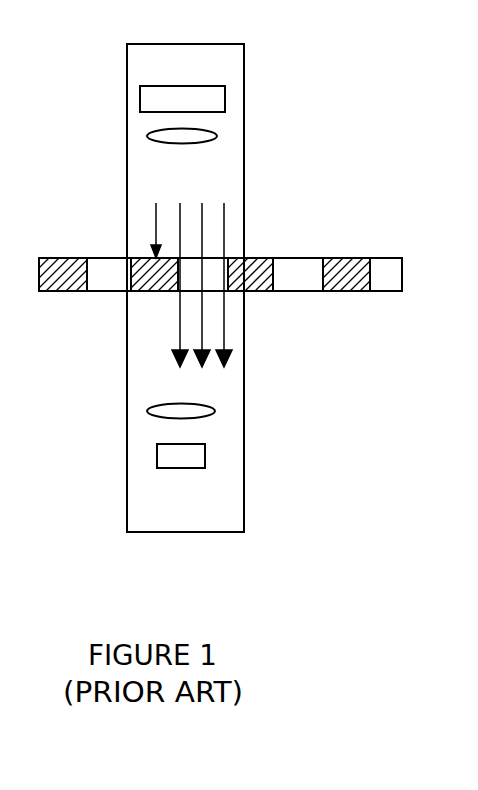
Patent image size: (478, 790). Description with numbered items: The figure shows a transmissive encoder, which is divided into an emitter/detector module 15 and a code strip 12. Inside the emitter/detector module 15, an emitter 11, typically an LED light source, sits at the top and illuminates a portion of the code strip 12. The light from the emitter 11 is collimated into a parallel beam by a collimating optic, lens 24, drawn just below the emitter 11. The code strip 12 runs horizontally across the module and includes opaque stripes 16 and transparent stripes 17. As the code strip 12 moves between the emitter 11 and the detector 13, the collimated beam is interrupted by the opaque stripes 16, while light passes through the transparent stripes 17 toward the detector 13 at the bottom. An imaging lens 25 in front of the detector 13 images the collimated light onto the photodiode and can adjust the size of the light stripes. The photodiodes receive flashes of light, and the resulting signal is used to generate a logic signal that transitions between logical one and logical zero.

The emitter 11 is at (141, 110).
The lens 24 is at (215, 134).
The emitter/detector module 15 is at (240, 196).
The code strip 12 is at (228, 298).
The opaque stripes 16 is at (336, 291).
The transparent stripes 17 is at (104, 290).
The imaging lens 25 is at (214, 410).
The detector 13 is at (182, 465).